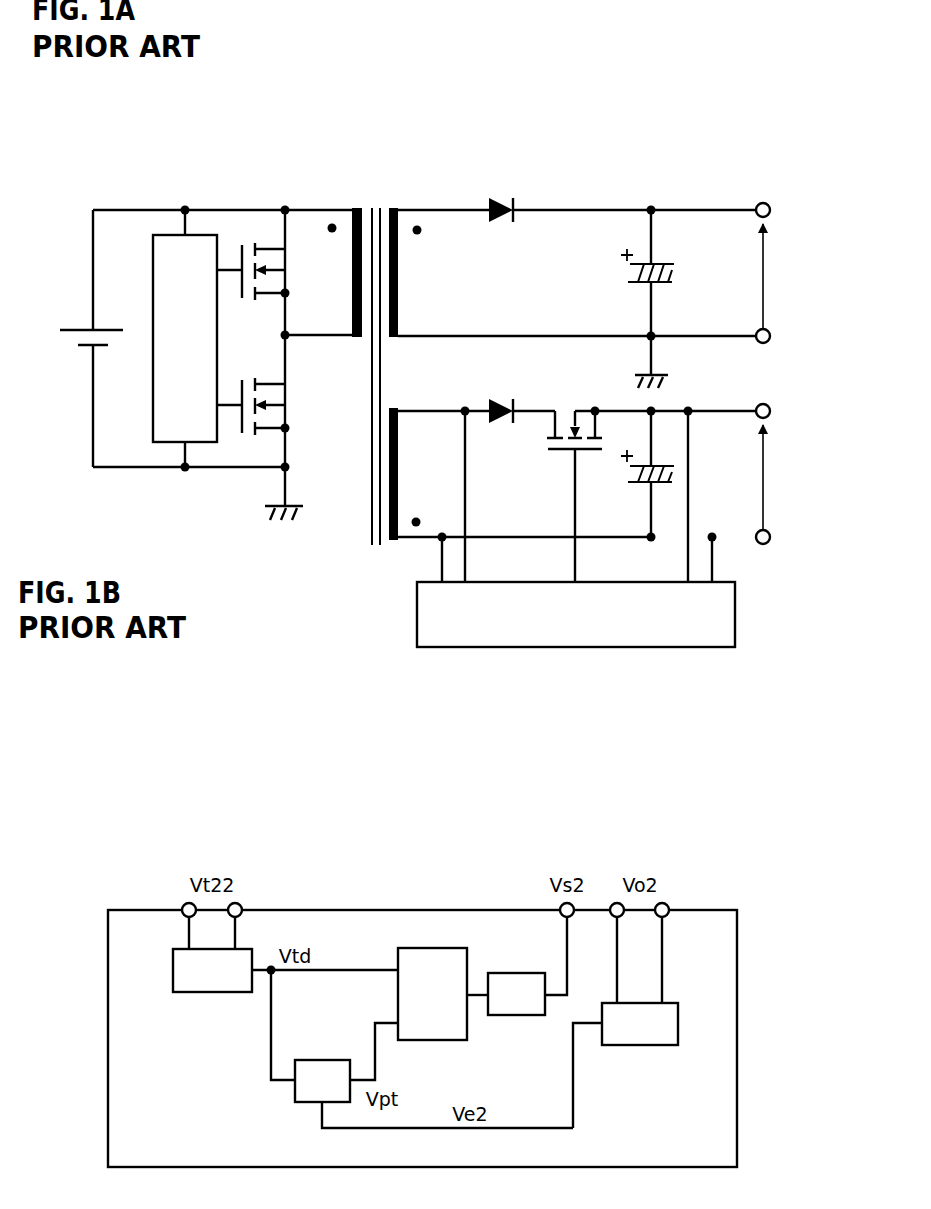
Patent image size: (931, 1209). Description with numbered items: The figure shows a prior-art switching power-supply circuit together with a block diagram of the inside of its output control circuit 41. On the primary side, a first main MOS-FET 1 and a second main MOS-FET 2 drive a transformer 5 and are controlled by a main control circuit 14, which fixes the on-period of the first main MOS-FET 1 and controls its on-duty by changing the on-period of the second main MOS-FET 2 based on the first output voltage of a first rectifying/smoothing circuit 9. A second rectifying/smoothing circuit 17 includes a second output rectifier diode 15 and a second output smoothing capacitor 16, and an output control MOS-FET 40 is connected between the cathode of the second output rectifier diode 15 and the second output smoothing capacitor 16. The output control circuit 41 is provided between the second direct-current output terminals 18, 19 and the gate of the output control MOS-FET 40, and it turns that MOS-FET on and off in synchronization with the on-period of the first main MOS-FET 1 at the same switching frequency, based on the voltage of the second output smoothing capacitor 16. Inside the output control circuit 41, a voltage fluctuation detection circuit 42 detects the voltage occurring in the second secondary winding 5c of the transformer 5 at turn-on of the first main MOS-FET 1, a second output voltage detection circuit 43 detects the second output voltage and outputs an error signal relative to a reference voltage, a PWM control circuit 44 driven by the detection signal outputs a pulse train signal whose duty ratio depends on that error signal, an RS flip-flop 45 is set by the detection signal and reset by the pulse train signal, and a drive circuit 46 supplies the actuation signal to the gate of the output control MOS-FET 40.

In FIG. 1A, the first main MOS-FET 1 is at (292, 402).
In FIG. 1A, the second main MOS-FET 2 is at (292, 267).
In FIG. 1A, the transformer 5 is at (377, 197).
In FIG. 1A, the second secondary winding 5c is at (524, 474).
In FIG. 1A, the first rectifying/smoothing circuit 9 is at (677, 187).
In FIG. 1A, the main control circuit 14 is at (185, 338).
In FIG. 1A, the second output rectifier diode 15 is at (500, 402).
In FIG. 1A, the second output smoothing capacitor 16 is at (641, 487).
In FIG. 1A, the second rectifying/smoothing circuit 17 is at (683, 396).
In FIG. 1A, the second direct-current output terminal 18 is at (768, 404).
In FIG. 1A, the second direct-current output terminal 19 is at (770, 543).
In FIG. 1A, the output control MOS-FET 40 is at (574, 404).
In FIG. 1A, the output control circuit 41 is at (576, 529).
In FIG. 1B, the output control circuit 41 is at (738, 909).
In FIG. 1B, the voltage fluctuation detection circuit 42 is at (218, 995).
In FIG. 1B, the second output voltage detection circuit 43 is at (642, 1047).
In FIG. 1B, the PWM control circuit 44 is at (332, 1059).
In FIG. 1B, the RS flip-flop 45 is at (434, 948).
In FIG. 1B, the drive circuit 46 is at (515, 972).